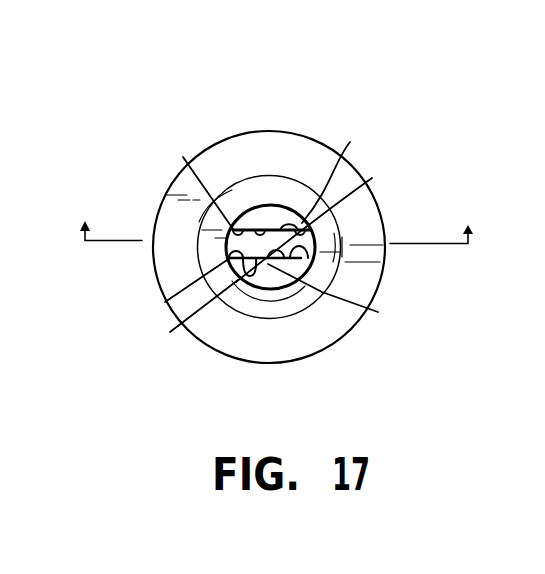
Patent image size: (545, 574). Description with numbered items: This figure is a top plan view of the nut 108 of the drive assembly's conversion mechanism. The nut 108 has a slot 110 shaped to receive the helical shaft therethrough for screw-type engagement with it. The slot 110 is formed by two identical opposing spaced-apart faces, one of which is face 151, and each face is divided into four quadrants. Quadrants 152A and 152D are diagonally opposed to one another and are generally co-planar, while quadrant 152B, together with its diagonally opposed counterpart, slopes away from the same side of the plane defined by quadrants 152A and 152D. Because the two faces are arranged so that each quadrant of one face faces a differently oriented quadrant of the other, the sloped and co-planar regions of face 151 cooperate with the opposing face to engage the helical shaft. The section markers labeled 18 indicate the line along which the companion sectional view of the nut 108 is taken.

The nut 108 is at (214, 104).
The slot 110 is at (268, 304).
The face 151 is at (253, 231).
The quadrant 152A is at (287, 228).
The quadrant 152B is at (261, 239).
The quadrant 152D is at (264, 240).
The section line 18- 18 is at (275, 219).